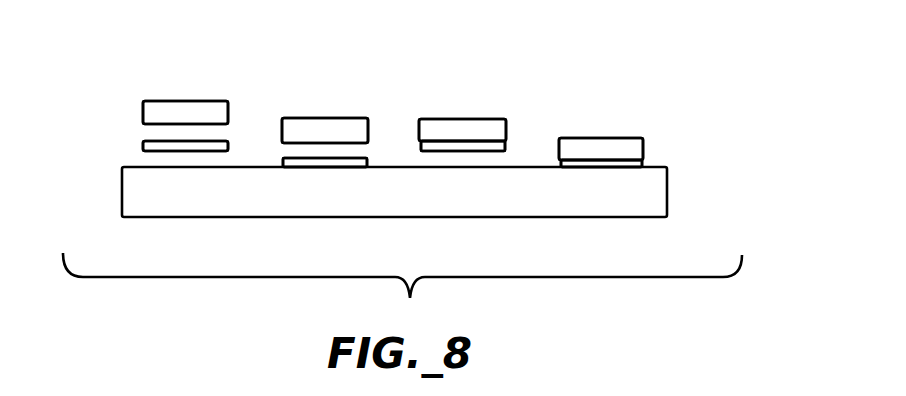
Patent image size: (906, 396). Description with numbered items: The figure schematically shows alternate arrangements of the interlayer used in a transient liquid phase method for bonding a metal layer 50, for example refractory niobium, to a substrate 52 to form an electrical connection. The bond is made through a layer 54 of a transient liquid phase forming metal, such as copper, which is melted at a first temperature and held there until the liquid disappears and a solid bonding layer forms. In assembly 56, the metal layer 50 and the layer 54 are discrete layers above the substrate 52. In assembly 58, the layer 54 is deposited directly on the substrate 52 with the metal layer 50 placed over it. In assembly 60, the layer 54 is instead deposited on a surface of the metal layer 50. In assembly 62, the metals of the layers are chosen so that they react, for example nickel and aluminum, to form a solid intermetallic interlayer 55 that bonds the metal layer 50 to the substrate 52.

The metal layer 50 is at (210, 101).
The substrate 52 is at (653, 202).
The layer of transient liquid phase forming metal 54 is at (178, 145).
The intermetallic interlayer 55 is at (645, 163).
The assembly 56 is at (175, 80).
The assembly 58 is at (314, 102).
The assembly 60 is at (459, 100).
The assembly 62 is at (601, 112).